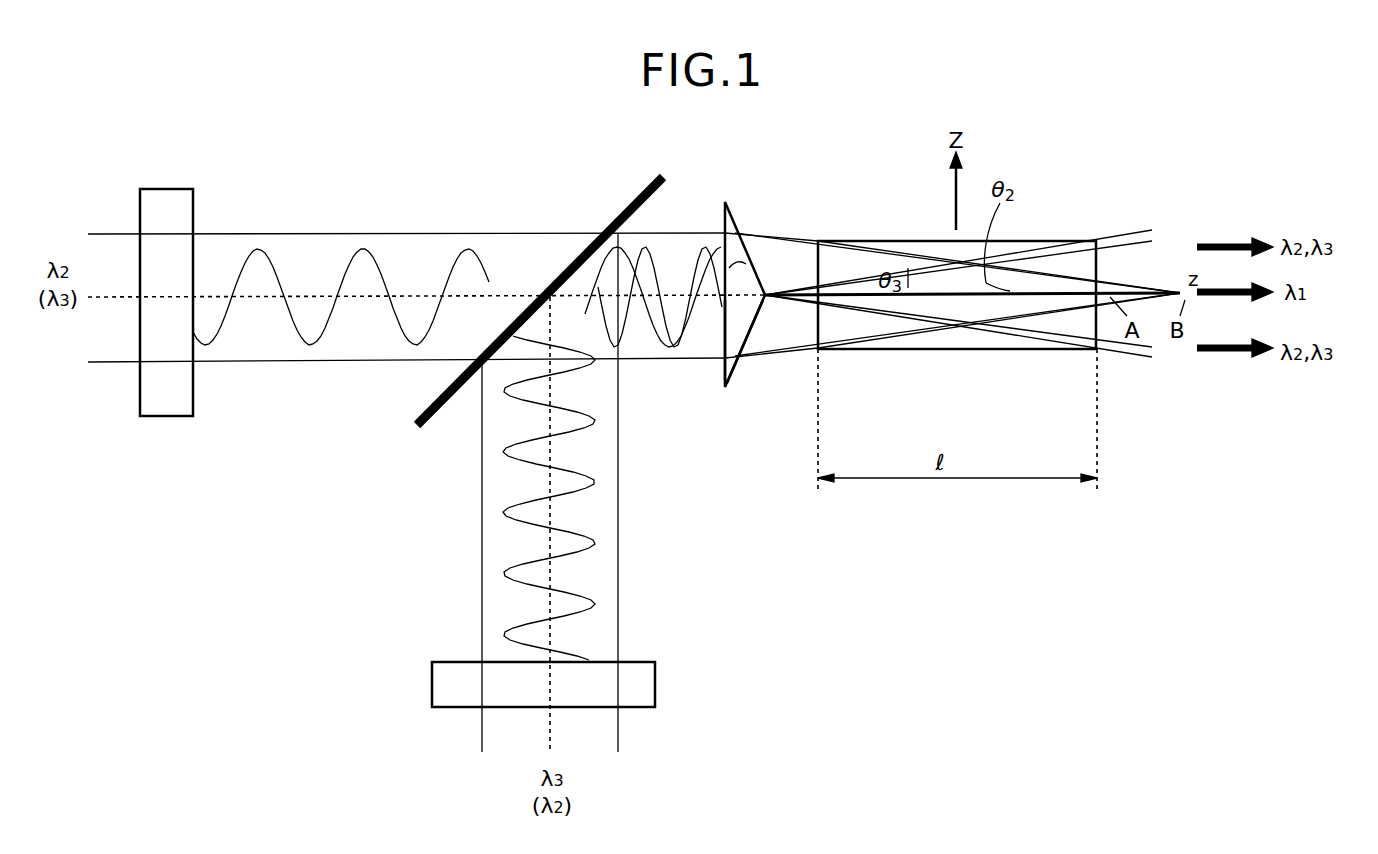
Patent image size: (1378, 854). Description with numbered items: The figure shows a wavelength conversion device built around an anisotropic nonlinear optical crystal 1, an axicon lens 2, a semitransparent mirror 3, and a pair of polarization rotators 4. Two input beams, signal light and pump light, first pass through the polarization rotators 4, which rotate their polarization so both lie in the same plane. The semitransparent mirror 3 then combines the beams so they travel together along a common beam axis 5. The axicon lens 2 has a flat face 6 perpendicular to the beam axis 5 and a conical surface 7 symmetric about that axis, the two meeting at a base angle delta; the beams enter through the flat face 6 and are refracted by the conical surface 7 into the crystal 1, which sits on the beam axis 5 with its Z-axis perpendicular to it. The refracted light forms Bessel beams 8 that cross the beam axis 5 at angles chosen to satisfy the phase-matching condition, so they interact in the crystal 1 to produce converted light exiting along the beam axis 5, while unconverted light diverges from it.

The anisotropic nonlinear optical crystal 1 is at (1068, 237).
The axicon lens 2 is at (730, 222).
The semitransparent mirror 3 is at (633, 198).
The polarization rotators 4 is at (168, 188).
The beam axis 5 is at (673, 294).
The flat face 6 is at (723, 338).
The conical surface 7 is at (748, 338).
The Bessel beams 8 is at (958, 297).